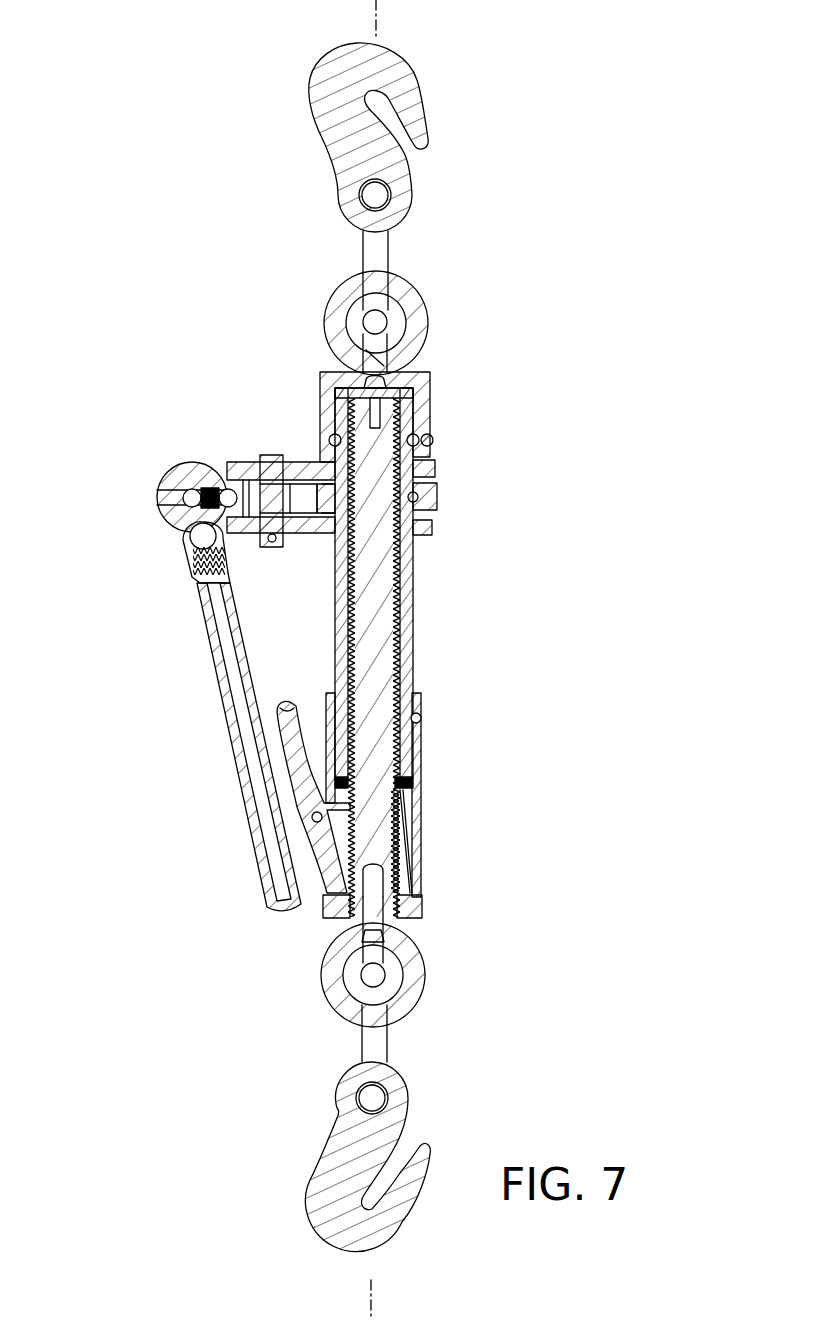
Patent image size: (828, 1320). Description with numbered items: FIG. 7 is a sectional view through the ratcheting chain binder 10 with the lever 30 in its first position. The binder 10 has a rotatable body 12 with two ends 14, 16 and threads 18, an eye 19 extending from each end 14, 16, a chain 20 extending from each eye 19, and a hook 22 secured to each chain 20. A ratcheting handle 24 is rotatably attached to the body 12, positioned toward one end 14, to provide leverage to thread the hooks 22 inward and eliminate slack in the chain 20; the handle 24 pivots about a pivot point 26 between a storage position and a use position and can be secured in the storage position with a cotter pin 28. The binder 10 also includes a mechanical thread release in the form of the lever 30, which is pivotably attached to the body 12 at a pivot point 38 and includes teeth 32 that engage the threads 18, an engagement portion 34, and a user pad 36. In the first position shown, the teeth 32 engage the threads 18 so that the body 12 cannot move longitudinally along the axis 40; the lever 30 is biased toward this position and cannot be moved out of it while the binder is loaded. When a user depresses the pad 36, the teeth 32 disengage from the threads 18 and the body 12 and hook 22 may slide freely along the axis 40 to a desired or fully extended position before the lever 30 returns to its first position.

The ratcheting chain binder 10 is at (637, 178).
The rotatable body 12 is at (413, 598).
The end 14 is at (428, 380).
The end 16 is at (420, 897).
The threads 18 is at (350, 650).
The eye 19 is at (408, 292).
The chain 20 is at (362, 240).
The hook 22 is at (410, 63).
The ratcheting handle 24 is at (203, 618).
The pivot point 26 is at (170, 520).
The cotter pin 28 is at (272, 548).
The lever 30 is at (327, 797).
The teeth 32 is at (327, 863).
The engagement portion 34 is at (390, 820).
The user pad 36 is at (287, 740).
The pivot point 38 is at (380, 790).
The axis 40 is at (372, 1290).